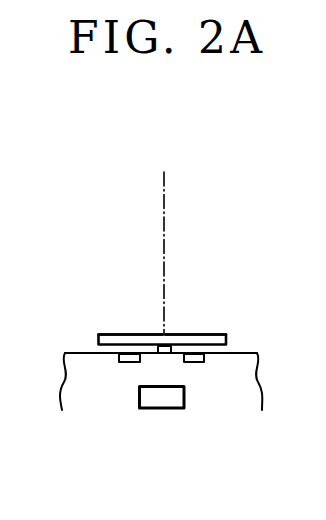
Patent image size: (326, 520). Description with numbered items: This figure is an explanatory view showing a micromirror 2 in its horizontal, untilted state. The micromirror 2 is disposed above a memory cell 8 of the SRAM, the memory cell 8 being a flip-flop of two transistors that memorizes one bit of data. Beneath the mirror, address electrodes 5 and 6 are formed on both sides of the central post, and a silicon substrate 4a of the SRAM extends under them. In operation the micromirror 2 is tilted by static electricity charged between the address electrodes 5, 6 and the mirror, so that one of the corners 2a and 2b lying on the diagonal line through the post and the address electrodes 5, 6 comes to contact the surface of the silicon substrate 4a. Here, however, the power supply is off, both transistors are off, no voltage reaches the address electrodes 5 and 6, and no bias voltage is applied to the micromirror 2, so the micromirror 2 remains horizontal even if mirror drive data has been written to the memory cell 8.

The micromirror 2 is at (183, 334).
The corner of micromirror 2a is at (100, 334).
The corner of micromirror 2b is at (227, 337).
The silicon substrate 4a is at (80, 372).
The address electrode 5 is at (128, 363).
The address electrode 6 is at (197, 363).
The memory cell 8 is at (165, 398).